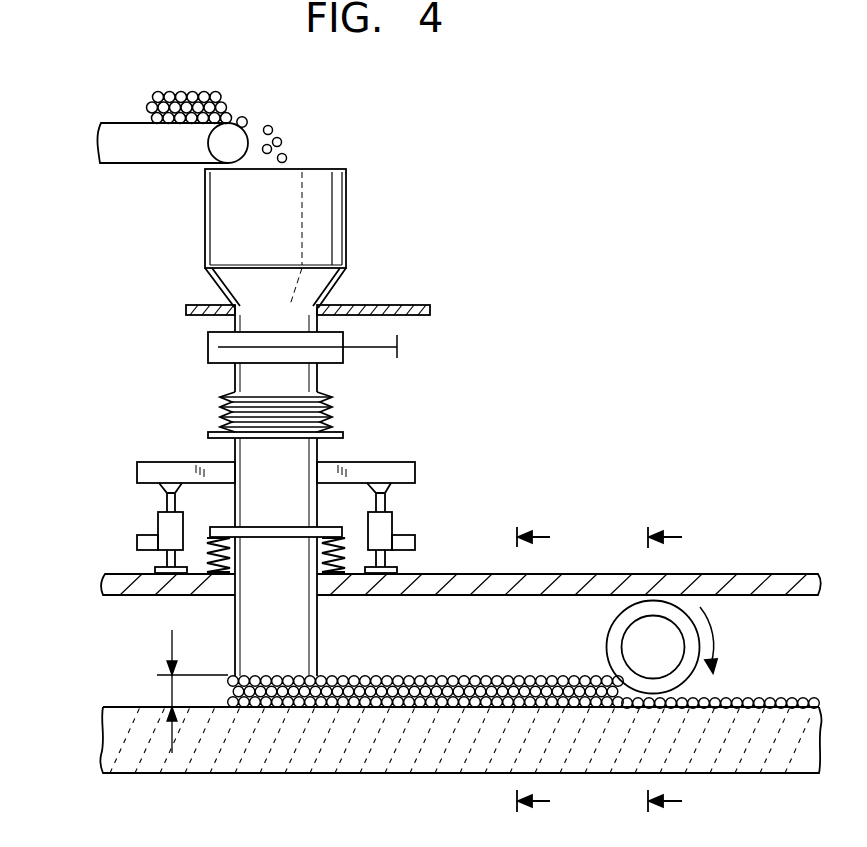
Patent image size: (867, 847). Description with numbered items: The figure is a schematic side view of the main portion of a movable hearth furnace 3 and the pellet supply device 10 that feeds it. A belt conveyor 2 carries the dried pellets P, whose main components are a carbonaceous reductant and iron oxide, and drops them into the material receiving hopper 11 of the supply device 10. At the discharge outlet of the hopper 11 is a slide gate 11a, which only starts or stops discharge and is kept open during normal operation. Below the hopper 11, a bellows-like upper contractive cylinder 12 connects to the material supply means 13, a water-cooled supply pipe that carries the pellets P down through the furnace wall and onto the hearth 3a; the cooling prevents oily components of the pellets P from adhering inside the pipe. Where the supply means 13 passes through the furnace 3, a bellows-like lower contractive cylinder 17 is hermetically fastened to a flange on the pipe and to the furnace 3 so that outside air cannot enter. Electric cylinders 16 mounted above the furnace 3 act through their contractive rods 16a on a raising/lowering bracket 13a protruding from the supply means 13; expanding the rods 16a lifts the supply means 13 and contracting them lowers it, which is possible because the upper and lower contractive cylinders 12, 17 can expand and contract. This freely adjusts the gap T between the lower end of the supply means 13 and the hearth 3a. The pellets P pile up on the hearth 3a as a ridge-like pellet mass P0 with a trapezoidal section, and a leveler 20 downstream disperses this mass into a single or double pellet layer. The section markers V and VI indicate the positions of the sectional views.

The belt conveyor 2 is at (137, 165).
The pellets P is at (232, 108).
The supply device 10 is at (430, 248).
The material receiving hopper 11 is at (330, 212).
The slide gate 11a is at (397, 347).
The upper contractive cylinder 12 is at (224, 410).
The material supply means 13 is at (234, 450).
The raising/lowering bracket 13a is at (160, 462).
The electric cylinders 16 is at (158, 527).
The contractive rods 16a is at (167, 503).
The lower contractive cylinder 17 is at (345, 562).
The movable hearth furnace 3 is at (120, 708).
The hearth 3a is at (108, 722).
The ridge-like pellet mass P0 is at (479, 676).
The leveler 20 is at (606, 652).
The gap T is at (189, 691).
The section line V is at (547, 668).
The section line VI is at (683, 668).